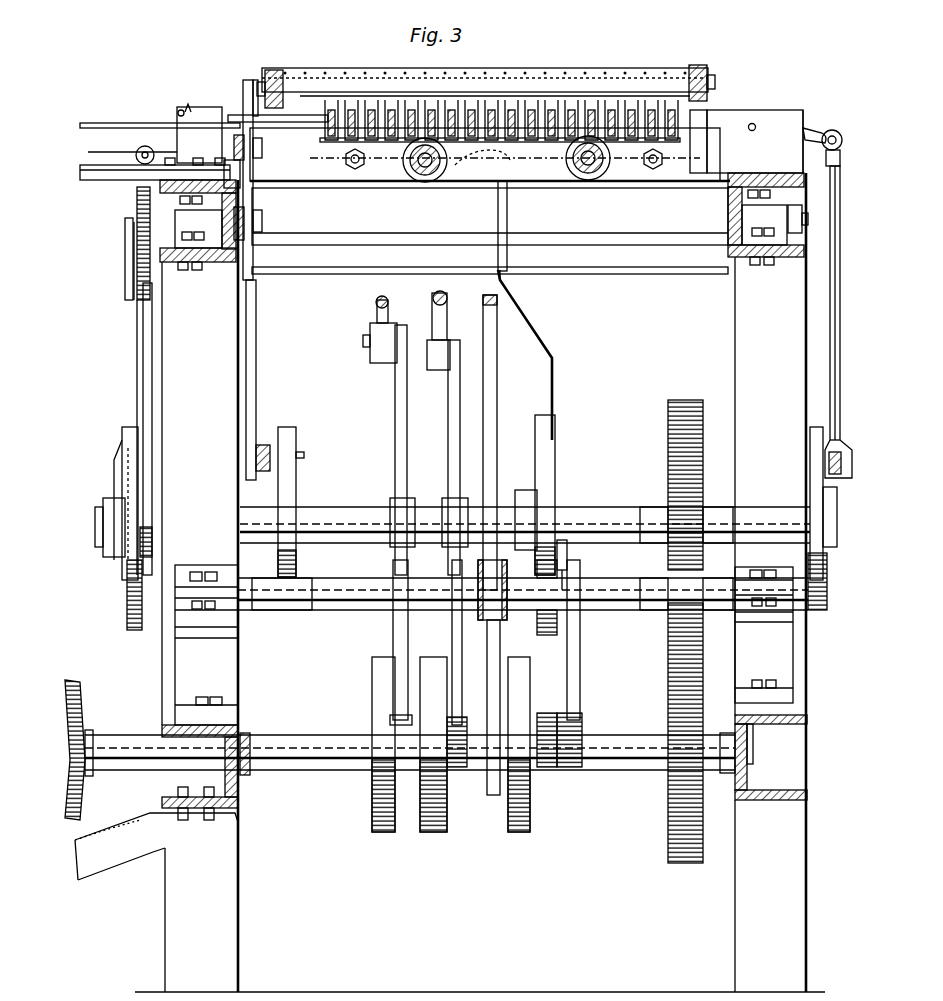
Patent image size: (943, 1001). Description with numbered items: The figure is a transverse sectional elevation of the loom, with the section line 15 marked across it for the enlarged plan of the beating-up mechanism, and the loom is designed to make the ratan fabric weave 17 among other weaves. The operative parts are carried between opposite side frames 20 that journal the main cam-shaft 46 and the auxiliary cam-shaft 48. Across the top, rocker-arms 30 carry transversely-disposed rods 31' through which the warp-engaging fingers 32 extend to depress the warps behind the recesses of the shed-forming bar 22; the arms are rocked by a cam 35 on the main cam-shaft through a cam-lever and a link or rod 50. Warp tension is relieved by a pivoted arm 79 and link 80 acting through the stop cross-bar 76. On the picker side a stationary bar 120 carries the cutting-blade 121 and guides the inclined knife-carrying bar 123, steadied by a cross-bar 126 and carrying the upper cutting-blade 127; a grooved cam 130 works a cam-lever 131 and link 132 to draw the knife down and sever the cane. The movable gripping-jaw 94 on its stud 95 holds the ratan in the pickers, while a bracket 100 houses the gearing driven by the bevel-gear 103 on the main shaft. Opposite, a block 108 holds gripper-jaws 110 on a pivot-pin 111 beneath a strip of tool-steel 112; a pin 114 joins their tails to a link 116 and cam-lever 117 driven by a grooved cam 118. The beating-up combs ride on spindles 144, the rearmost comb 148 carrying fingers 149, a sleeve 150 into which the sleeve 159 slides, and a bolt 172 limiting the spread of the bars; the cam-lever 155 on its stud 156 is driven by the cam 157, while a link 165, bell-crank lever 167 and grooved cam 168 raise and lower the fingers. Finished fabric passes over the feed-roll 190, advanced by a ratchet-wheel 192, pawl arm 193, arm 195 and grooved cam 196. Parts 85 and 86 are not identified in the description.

The section line 15 15 is at (544, 164).
The fabric weave 17 is at (445, 460).
The side frames 20 is at (175, 262).
The shed-forming bar 22 is at (330, 130).
The rocker-arms 30 is at (272, 70).
The transversely-disposed rods 31' is at (485, 54).
The warp-engaging fingers 32 is at (335, 100).
The cam 35 is at (432, 655).
The main cam-shaft 46 is at (325, 770).
The auxiliary cam-shaft 48 is at (605, 505).
The link or rod 50 is at (432, 298).
The cross-bar 76 is at (370, 675).
The pivoted arm 79 is at (392, 620).
The link 80 is at (378, 308).
The arm 85 is at (96, 181).
The block 86 is at (155, 135).
The movable gripping-jaw 94 is at (166, 122).
The stud 95 is at (176, 108).
The bracket 100 is at (112, 862).
The bevel-gear 103 is at (86, 783).
The block 108 is at (746, 141).
The gripper-jaw 110 is at (812, 125).
The pivot-pin 111 is at (754, 122).
The strip of tool-steel 112 is at (792, 110).
The pin 114 is at (838, 126).
The link 116 is at (830, 345).
The cam-lever 117 is at (828, 462).
The grooved cam 118 is at (813, 492).
The stationary bar 120 is at (246, 226).
The cutting-blade 121 is at (253, 200).
The knife-carrying bar 123 is at (243, 90).
The cross-bar 126 is at (234, 146).
The cutting-blade 127 is at (253, 82).
The grooved cam 130 is at (297, 470).
The cam-lever 131 is at (258, 455).
The link 132 is at (258, 395).
The spindles 144 is at (418, 180).
The beating-up comb 148 is at (482, 195).
The beating-up teeth or fingers 149 is at (508, 112).
The sleeve 150 is at (450, 182).
The cam-lever 155 is at (488, 410).
The stud 156 is at (326, 610).
The cam 157 is at (510, 832).
The sleeve 159 is at (418, 205).
The link 165 is at (506, 212).
The bell-crank lever 167 is at (575, 660).
The grooved cam 168 is at (550, 468).
The bolt 172 is at (352, 172).
The feed-roll 190 is at (313, 268).
The ratchet-wheel 192 is at (138, 268).
The arm 193 is at (128, 294).
The arm 195 is at (145, 365).
The grooved cam 196 is at (113, 595).